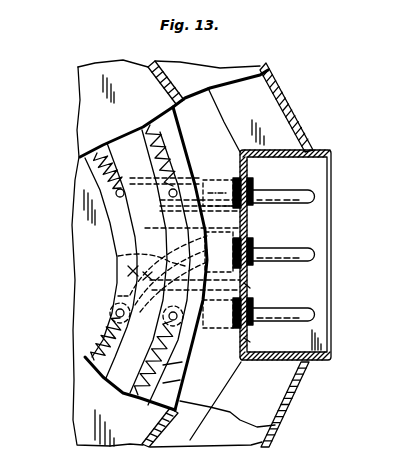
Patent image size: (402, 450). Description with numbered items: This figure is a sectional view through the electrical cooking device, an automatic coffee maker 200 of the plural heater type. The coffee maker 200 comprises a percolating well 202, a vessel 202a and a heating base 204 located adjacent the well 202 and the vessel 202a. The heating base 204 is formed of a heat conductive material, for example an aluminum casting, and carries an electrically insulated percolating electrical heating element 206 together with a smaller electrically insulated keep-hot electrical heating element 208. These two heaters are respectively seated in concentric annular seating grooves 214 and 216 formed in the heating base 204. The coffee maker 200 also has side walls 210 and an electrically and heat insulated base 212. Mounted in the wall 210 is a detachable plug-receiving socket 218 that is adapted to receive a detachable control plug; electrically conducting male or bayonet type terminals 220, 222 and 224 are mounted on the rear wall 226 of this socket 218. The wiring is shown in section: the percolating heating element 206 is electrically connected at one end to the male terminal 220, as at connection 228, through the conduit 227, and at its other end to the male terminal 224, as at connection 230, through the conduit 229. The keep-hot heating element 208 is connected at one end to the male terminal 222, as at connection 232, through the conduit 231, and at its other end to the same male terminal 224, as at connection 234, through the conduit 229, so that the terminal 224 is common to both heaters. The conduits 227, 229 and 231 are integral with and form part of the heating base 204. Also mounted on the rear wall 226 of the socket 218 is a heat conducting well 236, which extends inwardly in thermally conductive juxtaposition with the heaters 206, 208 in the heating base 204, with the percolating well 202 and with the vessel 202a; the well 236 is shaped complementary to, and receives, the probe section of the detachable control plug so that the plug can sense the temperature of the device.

The automatic coffee maker 200 is at (317, 96).
The percolating well 202 is at (88, 112).
The vessel 202a is at (218, 70).
The heating base 204 is at (177, 140).
The percolating electrical heating element 206 is at (133, 142).
The keep-hot electrical heating element 208 is at (98, 163).
The side wall 210 is at (303, 133).
The insulated base 212 is at (216, 128).
The annular seating groove 214 is at (177, 383).
The annular seating groove 216 is at (100, 352).
The plug-receiving socket 218 is at (324, 361).
The male terminal 220 is at (303, 304).
The male terminal 222 is at (303, 244).
The male terminal 224 is at (300, 190).
The rear wall 226 is at (252, 287).
The conduit 227 is at (211, 330).
The connection 228 is at (250, 342).
The conduit 229 is at (212, 178).
The connection 230 is at (202, 176).
The conduit 231 is at (127, 271).
The connection 232 is at (118, 296).
The connection 234 is at (250, 220).
The heat conducting well 236 is at (118, 254).